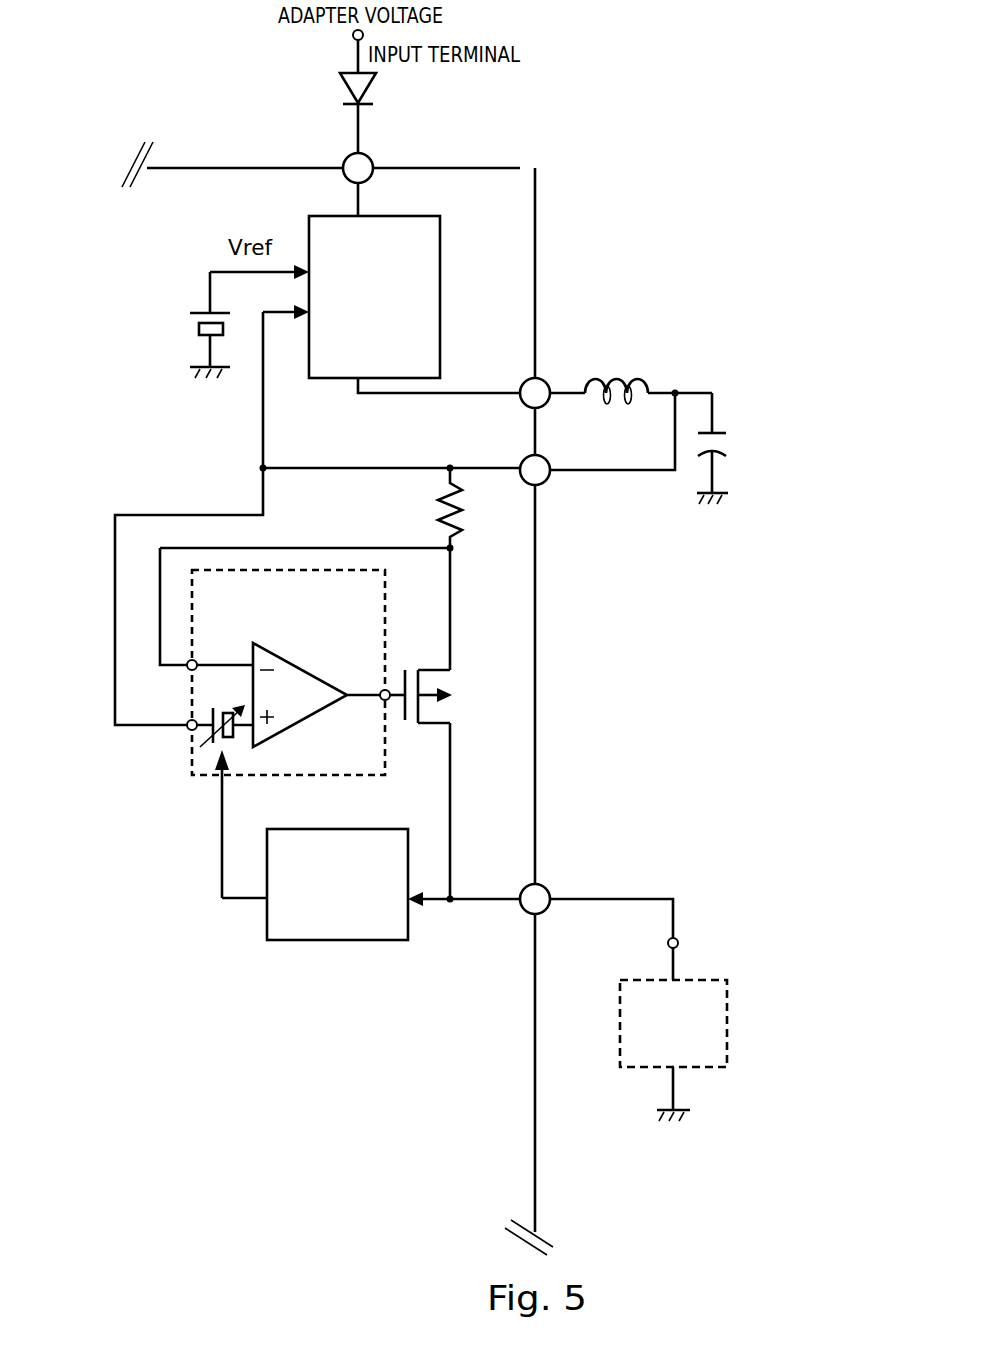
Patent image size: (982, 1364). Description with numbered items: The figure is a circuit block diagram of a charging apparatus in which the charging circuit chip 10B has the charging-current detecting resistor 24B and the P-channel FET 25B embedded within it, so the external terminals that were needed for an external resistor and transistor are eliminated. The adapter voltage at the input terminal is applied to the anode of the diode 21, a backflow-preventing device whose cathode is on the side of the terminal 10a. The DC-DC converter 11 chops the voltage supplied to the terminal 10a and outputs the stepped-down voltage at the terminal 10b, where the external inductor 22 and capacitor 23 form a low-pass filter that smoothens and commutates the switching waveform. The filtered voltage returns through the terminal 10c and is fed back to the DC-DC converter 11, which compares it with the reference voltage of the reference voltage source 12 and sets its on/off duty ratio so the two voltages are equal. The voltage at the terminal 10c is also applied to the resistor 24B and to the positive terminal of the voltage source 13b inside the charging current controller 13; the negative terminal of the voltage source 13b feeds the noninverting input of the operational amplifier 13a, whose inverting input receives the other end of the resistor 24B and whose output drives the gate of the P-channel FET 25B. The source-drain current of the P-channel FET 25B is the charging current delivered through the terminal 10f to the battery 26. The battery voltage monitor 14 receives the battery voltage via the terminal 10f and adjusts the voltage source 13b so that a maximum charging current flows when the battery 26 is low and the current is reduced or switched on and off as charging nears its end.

The diode 21 is at (366, 96).
The external connection terminal 10a is at (368, 158).
The charging circuit chip 10B is at (537, 197).
The DC-DC converter 11 is at (440, 251).
The reference voltage source 12 is at (195, 323).
The external connection terminal 10b is at (545, 380).
The inductor 22 is at (642, 380).
The capacitor 23 is at (725, 442).
The external connection terminal 10c is at (552, 462).
The resistor 24B is at (438, 505).
The charging current controller 13 is at (279, 695).
The operational amplifier 13a is at (292, 730).
The voltage source 13b is at (217, 750).
The P-channel FET 25B is at (447, 710).
The battery voltage monitor 14 is at (380, 940).
The external connection terminal 10f is at (545, 887).
The battery 26 is at (727, 1000).